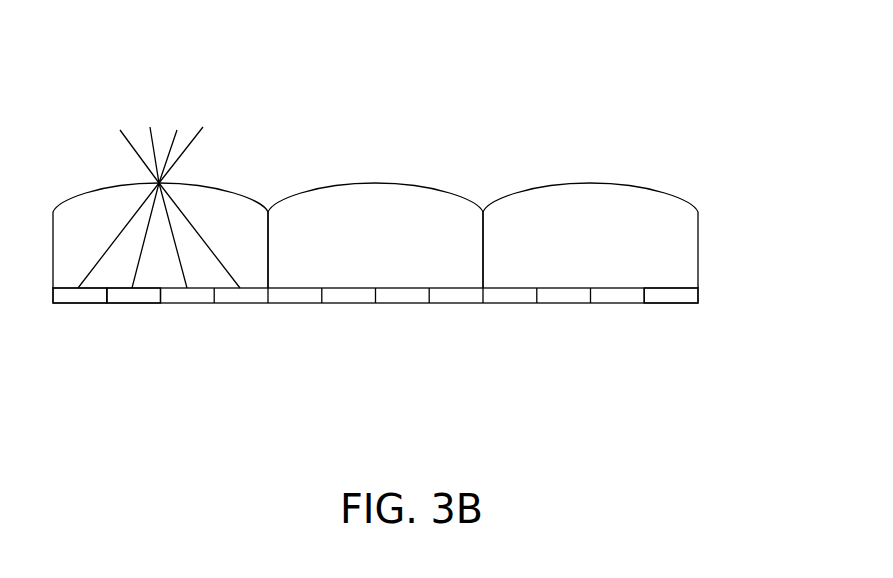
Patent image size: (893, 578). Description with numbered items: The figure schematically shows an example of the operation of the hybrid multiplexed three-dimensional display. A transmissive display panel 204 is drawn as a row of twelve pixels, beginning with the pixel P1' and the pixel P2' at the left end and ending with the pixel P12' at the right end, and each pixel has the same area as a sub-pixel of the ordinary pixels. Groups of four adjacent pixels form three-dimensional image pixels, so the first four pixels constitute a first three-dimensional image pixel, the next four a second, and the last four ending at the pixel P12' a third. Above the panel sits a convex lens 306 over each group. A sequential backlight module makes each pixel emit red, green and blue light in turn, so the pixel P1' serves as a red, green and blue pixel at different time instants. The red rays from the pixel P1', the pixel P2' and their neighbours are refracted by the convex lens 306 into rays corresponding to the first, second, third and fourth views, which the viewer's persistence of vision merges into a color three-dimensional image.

The convex lens 306 is at (65, 201).
The transmissive display panel 204 is at (713, 290).
The pixel P1' is at (80, 345).
The pixel P2' is at (134, 345).
The pixel P12' is at (671, 344).